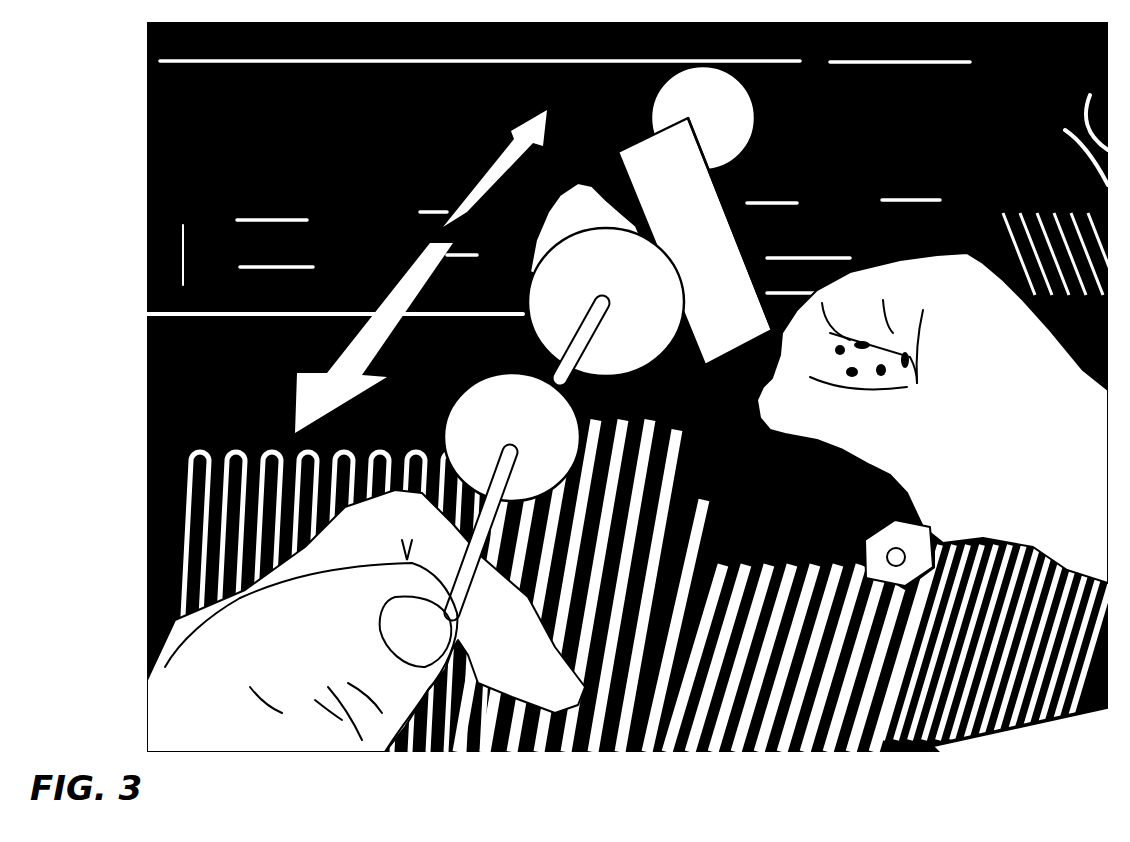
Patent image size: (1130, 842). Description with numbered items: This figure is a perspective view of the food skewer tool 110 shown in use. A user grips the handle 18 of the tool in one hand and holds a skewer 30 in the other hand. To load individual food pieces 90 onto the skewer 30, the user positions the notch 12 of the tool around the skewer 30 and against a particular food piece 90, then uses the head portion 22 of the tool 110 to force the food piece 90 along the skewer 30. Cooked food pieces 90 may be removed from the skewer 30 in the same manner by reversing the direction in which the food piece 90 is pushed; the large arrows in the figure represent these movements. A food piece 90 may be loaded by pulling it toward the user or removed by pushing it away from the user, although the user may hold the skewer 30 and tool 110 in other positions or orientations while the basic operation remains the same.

The notch 12 is at (590, 162).
The head portion 22 is at (635, 128).
The food piece 90 is at (733, 80).
The food skewer tool 110 is at (767, 180).
The skewer 30 is at (560, 370).
The handle 18 is at (927, 474).